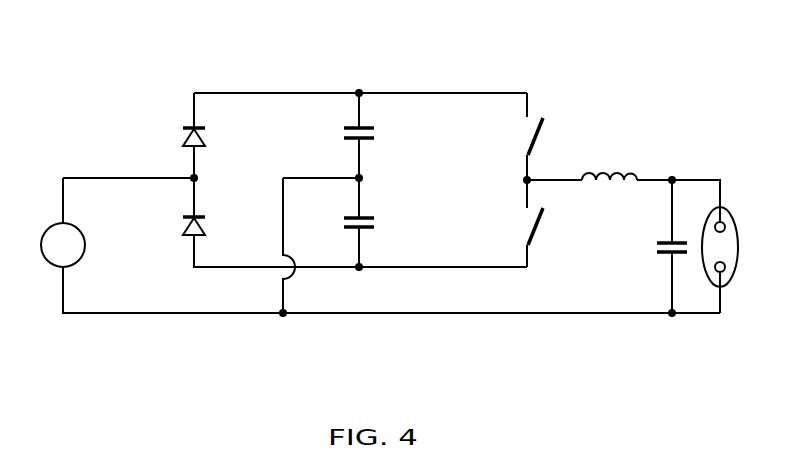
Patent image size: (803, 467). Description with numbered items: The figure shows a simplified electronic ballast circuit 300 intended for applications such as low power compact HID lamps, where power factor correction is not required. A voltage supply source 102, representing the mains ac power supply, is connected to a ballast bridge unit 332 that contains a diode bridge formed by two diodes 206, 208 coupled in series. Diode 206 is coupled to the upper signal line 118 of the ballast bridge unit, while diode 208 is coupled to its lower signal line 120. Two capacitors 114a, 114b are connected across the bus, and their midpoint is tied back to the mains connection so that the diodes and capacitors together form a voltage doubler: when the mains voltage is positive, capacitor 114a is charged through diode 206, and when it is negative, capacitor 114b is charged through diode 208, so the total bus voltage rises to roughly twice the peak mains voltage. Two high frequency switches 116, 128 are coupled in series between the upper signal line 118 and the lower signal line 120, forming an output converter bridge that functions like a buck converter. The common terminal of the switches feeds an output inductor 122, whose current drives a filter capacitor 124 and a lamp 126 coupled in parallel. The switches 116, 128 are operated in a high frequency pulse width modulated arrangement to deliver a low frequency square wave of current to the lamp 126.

The voltage supply source 102 is at (78, 262).
The diode 206 is at (194, 128).
The diode 208 is at (190, 237).
The ballast bridge unit 332 is at (258, 277).
The upper signal line 118 is at (430, 92).
The lower signal line 120 is at (437, 270).
The capacitor 114a is at (342, 137).
The capacitor 114b is at (367, 217).
The high frequency switch 116 is at (545, 120).
The high frequency switch 128 is at (538, 227).
The output inductor 122 is at (635, 172).
The filter capacitor 124 is at (663, 242).
The lamp 126 is at (738, 258).
The ballast circuit 300 is at (91, 334).